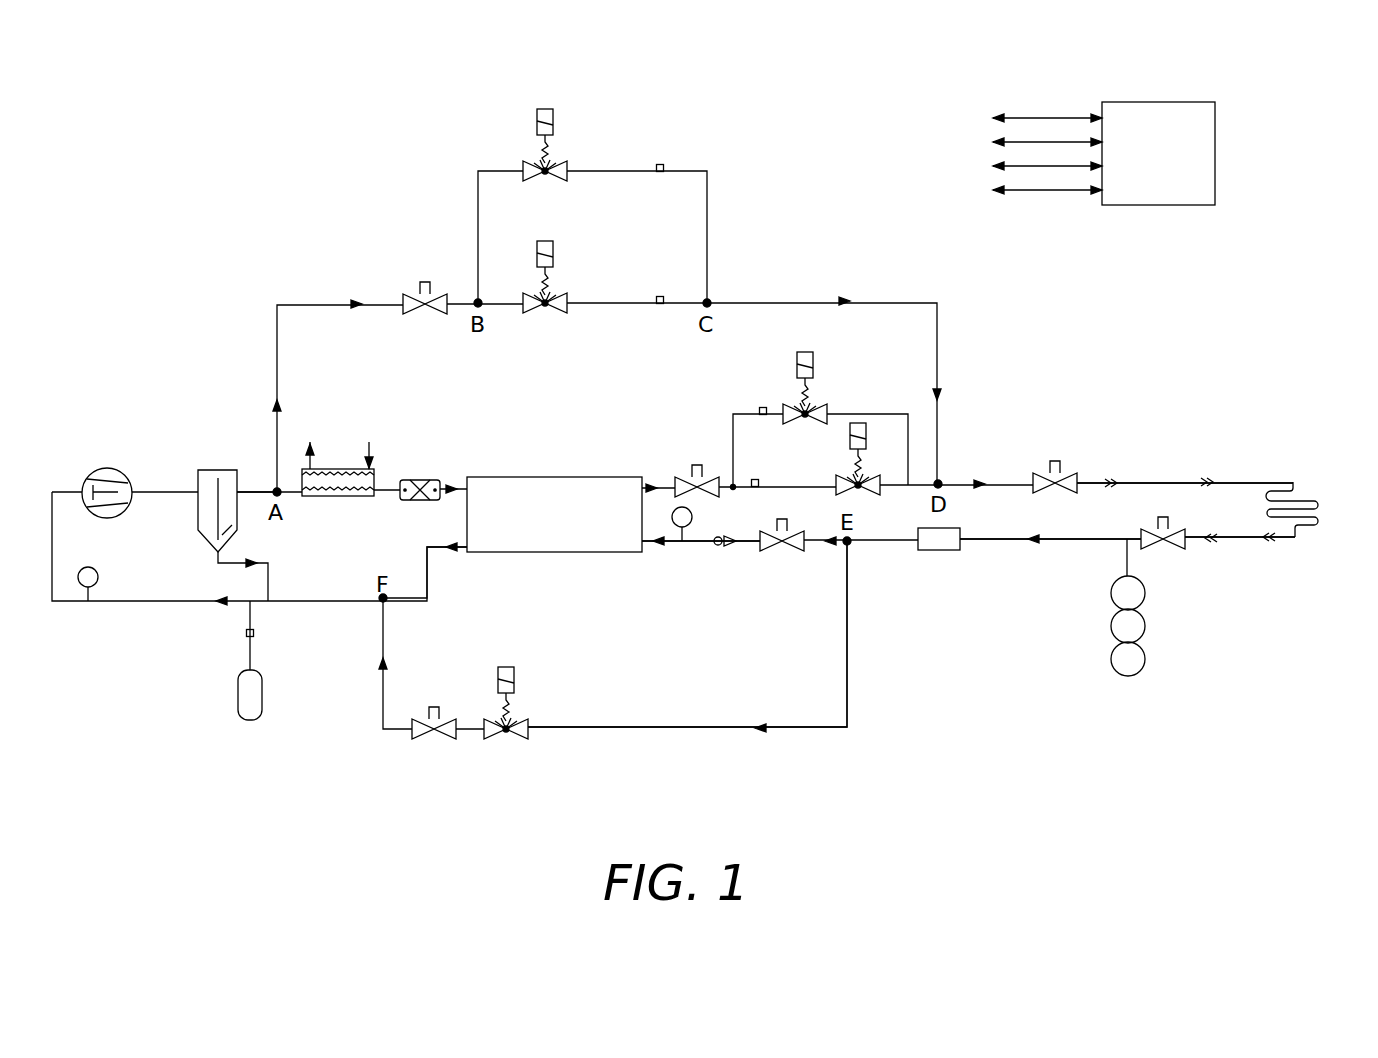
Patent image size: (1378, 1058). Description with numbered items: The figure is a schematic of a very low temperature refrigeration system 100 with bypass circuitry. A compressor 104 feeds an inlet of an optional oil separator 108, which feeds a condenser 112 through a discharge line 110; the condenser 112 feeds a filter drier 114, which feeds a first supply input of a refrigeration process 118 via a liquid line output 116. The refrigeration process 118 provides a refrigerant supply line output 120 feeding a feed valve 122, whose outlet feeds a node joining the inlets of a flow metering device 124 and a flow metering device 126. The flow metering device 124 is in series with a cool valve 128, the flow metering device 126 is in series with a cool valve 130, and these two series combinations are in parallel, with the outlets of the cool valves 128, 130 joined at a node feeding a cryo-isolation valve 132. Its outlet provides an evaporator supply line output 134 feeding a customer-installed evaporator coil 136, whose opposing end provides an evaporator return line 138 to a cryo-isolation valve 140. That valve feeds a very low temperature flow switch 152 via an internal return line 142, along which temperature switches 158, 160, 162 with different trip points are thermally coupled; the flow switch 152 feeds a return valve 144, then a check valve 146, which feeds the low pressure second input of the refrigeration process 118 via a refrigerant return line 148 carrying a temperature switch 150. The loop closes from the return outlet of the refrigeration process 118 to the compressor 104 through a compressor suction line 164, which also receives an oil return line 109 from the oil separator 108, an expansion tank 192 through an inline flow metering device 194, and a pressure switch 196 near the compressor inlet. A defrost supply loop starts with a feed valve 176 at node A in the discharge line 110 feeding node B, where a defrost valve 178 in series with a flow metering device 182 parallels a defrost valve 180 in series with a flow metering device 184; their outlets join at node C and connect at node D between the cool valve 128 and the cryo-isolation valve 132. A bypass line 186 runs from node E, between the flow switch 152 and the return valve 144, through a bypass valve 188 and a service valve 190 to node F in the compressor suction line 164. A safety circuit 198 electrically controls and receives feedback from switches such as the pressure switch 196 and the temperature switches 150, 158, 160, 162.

The very low temperature refrigeration system 100 is at (192, 178).
The compressor 104 is at (103, 470).
The oil separator 108 is at (210, 470).
The oil return line 109 is at (218, 560).
The discharge line 110 is at (268, 488).
The condenser 112 is at (343, 497).
The filter drier 114 is at (400, 483).
The liquid line output 116 is at (438, 480).
The refrigeration process 118 is at (554, 514).
The refrigerant supply line output 120 is at (682, 488).
The feed valve 122 is at (697, 478).
The flow metering device 124 is at (759, 484).
The flow metering device 126 is at (760, 410).
The cool valve 128 is at (880, 482).
The cool valve 130 is at (815, 408).
The cryo-isolation valve 132 is at (1068, 480).
The evaporator supply line output 134 is at (1165, 482).
The evaporator coil 136 is at (1305, 488).
The evaporator return line 138 is at (1250, 540).
The cryo-isolation valve 140 is at (1168, 548).
The internal return line 142 is at (1008, 541).
The return valve 144 is at (787, 552).
The check valve 146 is at (720, 548).
The refrigerant return line 148 is at (665, 542).
The temperature switch 150 is at (692, 517).
The very low temperature flow switch 152 is at (940, 550).
The temperature switch 158 is at (1112, 593).
The temperature switch 160 is at (1112, 626).
The temperature switch 162 is at (1112, 659).
The compressor suction line 164 is at (430, 560).
The feed valve 176 is at (435, 315).
The defrost valve 178 is at (530, 315).
The defrost valve 180 is at (530, 180).
The flow metering device 182 is at (657, 298).
The flow metering device 184 is at (663, 167).
The bypass line 186 is at (810, 728).
The bypass valve 188 is at (522, 737).
The service valve 190 is at (448, 738).
The expansion tank 192 is at (245, 720).
The flow metering device 194 is at (246, 633).
The pressure switch 196 is at (95, 570).
The safety circuit 198 is at (1165, 154).